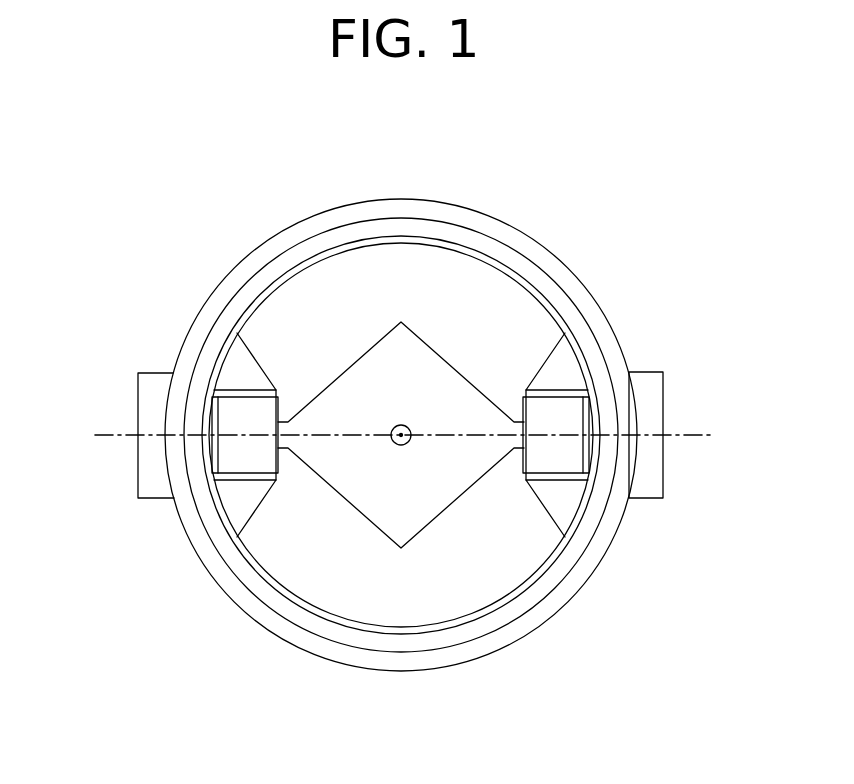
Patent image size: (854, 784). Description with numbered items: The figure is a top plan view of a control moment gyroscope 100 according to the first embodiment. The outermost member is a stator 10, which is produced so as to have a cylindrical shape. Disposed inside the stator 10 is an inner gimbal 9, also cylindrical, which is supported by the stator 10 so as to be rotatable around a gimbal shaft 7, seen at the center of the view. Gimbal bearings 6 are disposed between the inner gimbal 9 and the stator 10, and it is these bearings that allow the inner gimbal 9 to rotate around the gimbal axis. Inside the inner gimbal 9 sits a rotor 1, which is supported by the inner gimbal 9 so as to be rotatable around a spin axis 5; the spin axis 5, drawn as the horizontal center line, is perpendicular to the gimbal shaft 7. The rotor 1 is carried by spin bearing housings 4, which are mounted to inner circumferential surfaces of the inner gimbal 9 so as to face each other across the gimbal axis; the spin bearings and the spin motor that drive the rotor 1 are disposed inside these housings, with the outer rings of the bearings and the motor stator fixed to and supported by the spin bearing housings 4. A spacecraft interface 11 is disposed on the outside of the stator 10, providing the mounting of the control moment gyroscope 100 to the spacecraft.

The control moment gyroscope 100 is at (124, 164).
The rotor 1 is at (441, 352).
The spin bearing housing 4 is at (243, 462).
The spin axis 5 is at (690, 430).
The gimbal bearing 6 is at (548, 287).
The gimbal shaft 7 is at (399, 438).
The inner gimbal 9 is at (243, 313).
The stator 10 is at (258, 256).
The spacecraft interface 11 is at (650, 380).